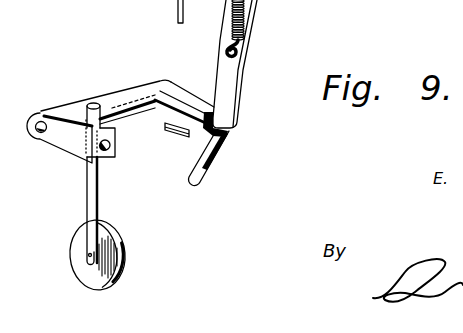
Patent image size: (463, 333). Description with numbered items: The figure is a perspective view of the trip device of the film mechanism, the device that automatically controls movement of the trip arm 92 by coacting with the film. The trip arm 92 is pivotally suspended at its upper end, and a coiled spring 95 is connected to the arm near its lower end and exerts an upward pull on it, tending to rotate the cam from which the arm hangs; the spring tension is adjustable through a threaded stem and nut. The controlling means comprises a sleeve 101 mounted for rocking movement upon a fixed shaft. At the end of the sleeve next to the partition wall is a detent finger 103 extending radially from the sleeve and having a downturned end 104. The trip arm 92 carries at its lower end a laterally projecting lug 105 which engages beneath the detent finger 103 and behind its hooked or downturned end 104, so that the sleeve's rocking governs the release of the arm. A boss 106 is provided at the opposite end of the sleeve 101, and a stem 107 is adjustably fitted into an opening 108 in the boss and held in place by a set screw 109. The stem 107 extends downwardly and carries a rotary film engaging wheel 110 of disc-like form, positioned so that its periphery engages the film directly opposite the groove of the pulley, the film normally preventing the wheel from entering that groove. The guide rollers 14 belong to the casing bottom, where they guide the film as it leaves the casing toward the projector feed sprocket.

The guide rollers 14 is at (161, 11).
The trip arm 92 is at (230, 79).
The coiled spring 95 is at (244, 16).
The sleeve 101 is at (127, 96).
The detent finger 103 is at (186, 94).
The downturned end 104 is at (212, 167).
The lug 105 is at (222, 124).
The boss 106 is at (78, 143).
The stem 107 is at (99, 180).
The opening 108 is at (110, 131).
The set screw 109 is at (116, 147).
The film engaging wheel 110 is at (122, 262).